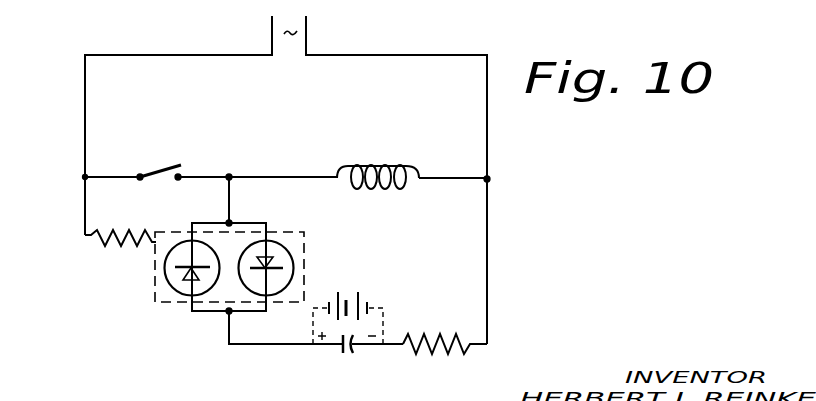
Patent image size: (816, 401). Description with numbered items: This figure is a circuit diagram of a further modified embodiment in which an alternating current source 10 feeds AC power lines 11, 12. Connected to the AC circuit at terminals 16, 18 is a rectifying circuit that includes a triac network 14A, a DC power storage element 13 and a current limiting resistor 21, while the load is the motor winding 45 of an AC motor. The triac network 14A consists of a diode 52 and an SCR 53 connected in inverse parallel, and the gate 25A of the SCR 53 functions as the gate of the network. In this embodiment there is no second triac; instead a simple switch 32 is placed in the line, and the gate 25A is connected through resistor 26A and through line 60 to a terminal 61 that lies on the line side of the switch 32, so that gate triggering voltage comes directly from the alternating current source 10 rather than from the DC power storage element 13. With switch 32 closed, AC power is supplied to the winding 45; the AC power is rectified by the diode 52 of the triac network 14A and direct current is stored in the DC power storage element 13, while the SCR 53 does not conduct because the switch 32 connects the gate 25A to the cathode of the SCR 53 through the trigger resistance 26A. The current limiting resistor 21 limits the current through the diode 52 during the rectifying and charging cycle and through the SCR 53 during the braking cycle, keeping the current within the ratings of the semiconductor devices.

The alternating current source 10 is at (292, 47).
The AC power line 11 is at (84, 113).
The AC power line 12 is at (488, 132).
The DC power storage element 13 is at (333, 359).
The triac network 14A is at (308, 268).
The terminal 16 is at (230, 173).
The terminal 18 is at (489, 180).
The current limiting resistor 21 is at (419, 356).
The gate 25A is at (188, 267).
The resistor 26A is at (107, 248).
The switch 32 is at (156, 166).
The motor winding 45 is at (376, 166).
The diode 52 is at (293, 252).
The SCR 53 is at (172, 289).
The line 60 is at (86, 250).
The terminal 61 is at (83, 177).